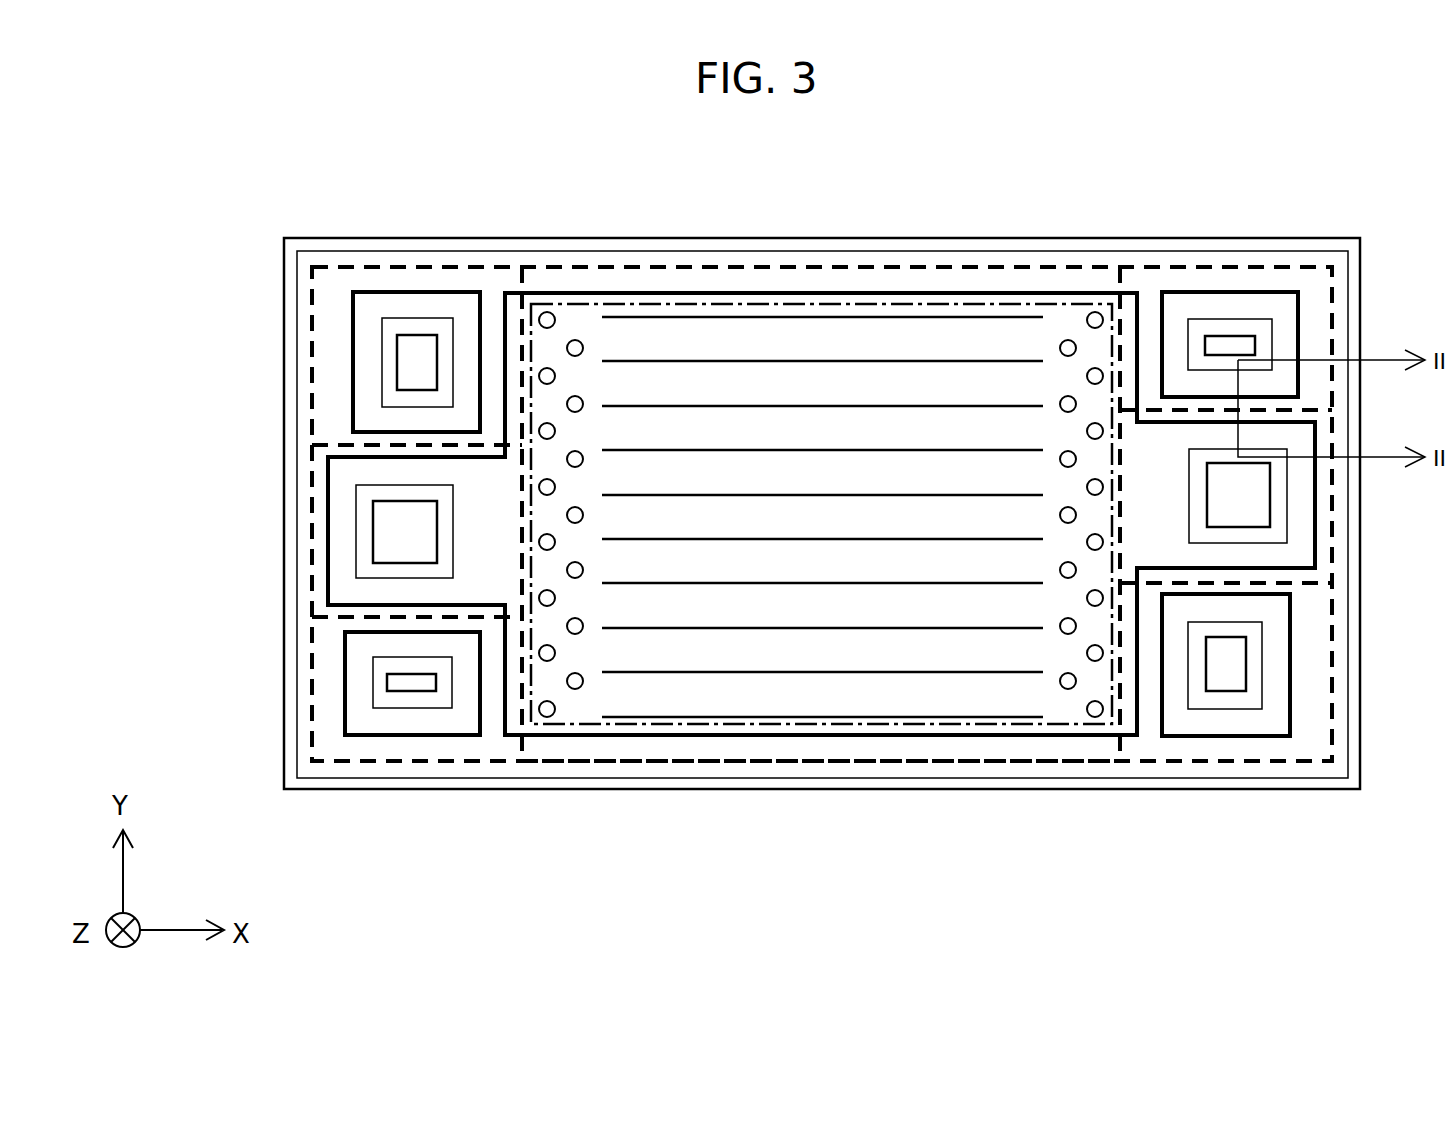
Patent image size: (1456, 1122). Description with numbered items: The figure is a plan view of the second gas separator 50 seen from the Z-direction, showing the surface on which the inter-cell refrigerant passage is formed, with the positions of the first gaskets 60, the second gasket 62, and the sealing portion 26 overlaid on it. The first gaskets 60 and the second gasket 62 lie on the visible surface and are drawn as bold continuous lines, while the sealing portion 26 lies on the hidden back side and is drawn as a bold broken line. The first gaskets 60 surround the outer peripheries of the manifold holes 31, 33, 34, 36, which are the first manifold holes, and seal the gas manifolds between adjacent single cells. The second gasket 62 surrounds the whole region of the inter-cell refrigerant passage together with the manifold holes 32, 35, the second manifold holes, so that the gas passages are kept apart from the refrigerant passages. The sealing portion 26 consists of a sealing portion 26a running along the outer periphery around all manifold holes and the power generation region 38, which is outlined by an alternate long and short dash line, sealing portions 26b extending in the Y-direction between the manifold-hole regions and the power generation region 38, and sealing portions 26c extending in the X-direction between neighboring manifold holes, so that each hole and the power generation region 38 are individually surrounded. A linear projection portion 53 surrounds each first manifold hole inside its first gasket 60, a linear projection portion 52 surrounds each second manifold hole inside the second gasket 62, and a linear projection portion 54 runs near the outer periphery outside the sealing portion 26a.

The sealing portion 26 is at (1068, 765).
The sealing portion 26a is at (803, 765).
The sealing portion 26b is at (522, 278).
The sealing portion 26c is at (323, 443).
The manifold hole 31 is at (397, 348).
The manifold hole 32 is at (373, 543).
The manifold hole 33 is at (387, 680).
The manifold hole 34 is at (1255, 343).
The manifold hole 35 is at (1270, 515).
The manifold hole 36 is at (1246, 650).
The power generation region 38 is at (660, 725).
The second gas separator 50 is at (953, 181).
The linear projection portion 52 is at (356, 520).
The linear projection portion 53 is at (437, 318).
The linear projection portion 54 is at (297, 275).
The first gasket 60 is at (380, 292).
The second gasket 62 is at (968, 735).